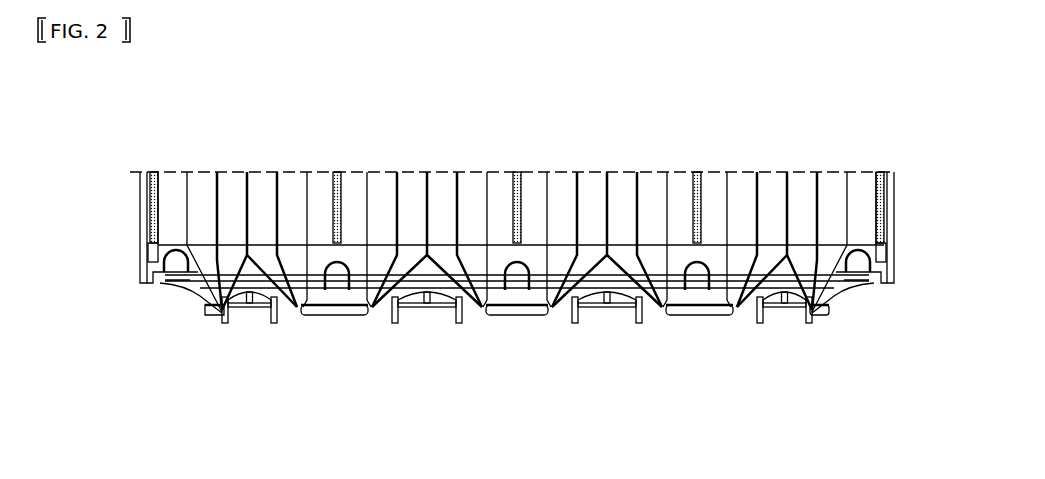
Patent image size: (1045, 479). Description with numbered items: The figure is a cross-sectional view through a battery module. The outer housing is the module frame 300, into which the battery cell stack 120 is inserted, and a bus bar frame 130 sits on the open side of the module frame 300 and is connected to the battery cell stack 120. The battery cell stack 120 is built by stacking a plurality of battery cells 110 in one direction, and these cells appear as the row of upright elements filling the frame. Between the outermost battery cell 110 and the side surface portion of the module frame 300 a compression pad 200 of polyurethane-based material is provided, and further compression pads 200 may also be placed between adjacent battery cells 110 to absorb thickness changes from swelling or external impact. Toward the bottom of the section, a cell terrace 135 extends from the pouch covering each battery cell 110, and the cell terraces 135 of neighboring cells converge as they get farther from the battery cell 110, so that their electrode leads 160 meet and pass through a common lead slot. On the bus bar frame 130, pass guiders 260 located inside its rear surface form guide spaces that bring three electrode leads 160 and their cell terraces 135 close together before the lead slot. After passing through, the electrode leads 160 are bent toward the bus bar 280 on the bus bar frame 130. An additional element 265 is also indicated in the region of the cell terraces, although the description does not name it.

The battery cell 110 is at (621, 190).
The battery cell stack 120 is at (751, 158).
The bus bar frame 130 is at (834, 313).
The cell terrace 135 is at (227, 250).
The electrode lead 160 is at (238, 321).
The compression pad 200 is at (152, 172).
The pass guider 260 is at (260, 320).
The intermediate plate 265 is at (405, 250).
The bus bar 280 is at (247, 315).
The module frame 300 is at (145, 172).